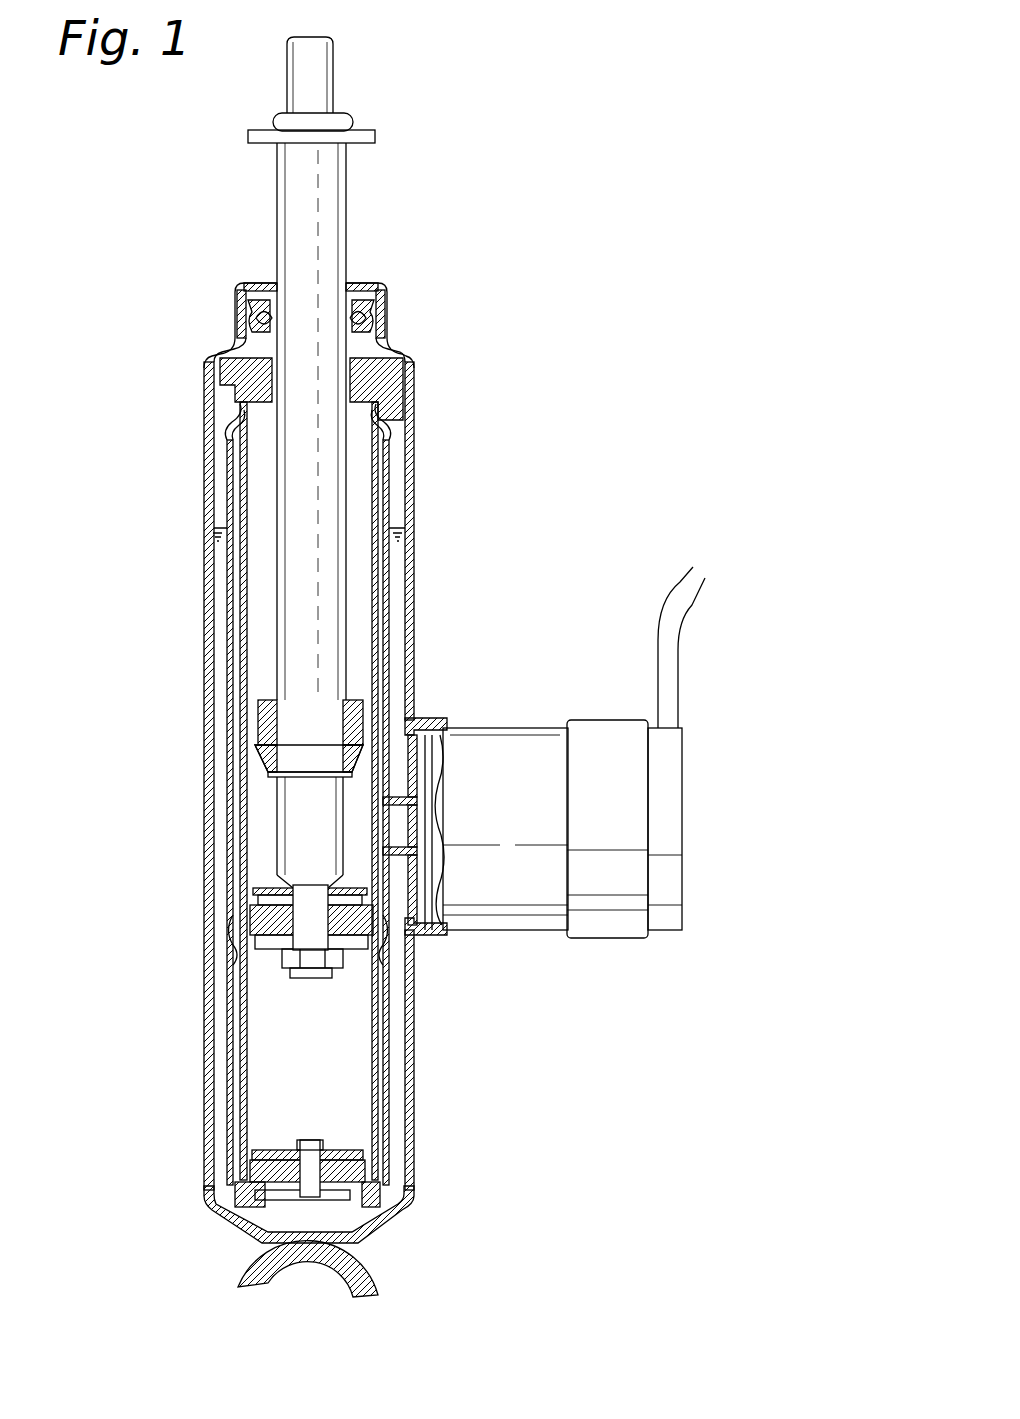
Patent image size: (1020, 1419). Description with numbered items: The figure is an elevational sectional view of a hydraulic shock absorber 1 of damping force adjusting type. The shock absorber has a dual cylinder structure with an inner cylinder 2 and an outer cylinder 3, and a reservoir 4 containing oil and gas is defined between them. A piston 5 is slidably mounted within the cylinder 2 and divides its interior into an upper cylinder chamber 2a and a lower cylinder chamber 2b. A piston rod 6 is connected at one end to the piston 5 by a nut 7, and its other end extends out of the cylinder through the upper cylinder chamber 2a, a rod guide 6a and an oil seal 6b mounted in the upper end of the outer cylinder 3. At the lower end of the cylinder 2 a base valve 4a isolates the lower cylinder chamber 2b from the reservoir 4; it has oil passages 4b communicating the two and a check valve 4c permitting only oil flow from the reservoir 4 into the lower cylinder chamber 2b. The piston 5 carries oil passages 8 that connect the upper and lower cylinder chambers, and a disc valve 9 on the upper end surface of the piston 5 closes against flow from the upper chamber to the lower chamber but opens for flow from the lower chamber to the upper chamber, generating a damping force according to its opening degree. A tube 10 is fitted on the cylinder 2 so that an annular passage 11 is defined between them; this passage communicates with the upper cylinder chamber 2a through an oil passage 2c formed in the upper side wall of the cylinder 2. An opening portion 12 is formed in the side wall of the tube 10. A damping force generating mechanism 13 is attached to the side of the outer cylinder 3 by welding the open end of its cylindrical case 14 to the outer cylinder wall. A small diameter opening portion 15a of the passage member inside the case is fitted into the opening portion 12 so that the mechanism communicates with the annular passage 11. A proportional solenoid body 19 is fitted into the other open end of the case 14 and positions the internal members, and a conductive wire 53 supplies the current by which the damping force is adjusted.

The hydraulic shock absorber 1 is at (550, 160).
The inner cylinder 2 is at (214, 513).
The upper cylinder chamber 2a is at (253, 672).
The lower cylinder chamber 2b is at (262, 1072).
The oil passage 2c is at (395, 452).
The outer cylinder 3 is at (202, 427).
The reservoir 4 is at (220, 587).
The base valve 4a is at (348, 1140).
The oil passages 4b is at (252, 1226).
The check valve 4c is at (248, 1167).
The piston 5 is at (250, 918).
The piston rod 6 is at (287, 190).
The rod guide 6a is at (393, 375).
The oil seal 6b is at (378, 290).
The nut 7 is at (285, 960).
The oil passages 8 is at (283, 945).
The disc valve 9 is at (270, 893).
The tube 10 is at (397, 528).
The annular passage 11 is at (388, 578).
The opening portion 12 is at (393, 830).
The damping force generating mechanism 13 is at (493, 958).
The cylindrical case 14 is at (447, 727).
The small diameter opening portion 15a is at (413, 837).
The proportional solenoid body 19 is at (668, 797).
The conductive wire 53 is at (663, 625).